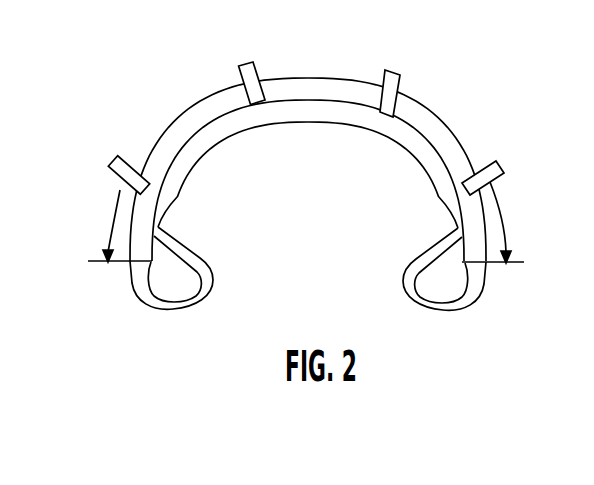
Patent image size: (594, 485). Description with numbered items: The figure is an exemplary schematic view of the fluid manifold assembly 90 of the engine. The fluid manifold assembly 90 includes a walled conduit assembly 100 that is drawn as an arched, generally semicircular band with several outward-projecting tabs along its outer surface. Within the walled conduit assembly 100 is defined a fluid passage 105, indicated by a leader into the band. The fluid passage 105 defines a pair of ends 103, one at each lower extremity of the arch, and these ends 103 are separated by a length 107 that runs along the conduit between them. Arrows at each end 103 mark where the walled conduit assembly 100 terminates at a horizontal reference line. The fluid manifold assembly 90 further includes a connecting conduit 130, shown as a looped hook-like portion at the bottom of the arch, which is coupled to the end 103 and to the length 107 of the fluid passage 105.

The fluid manifold assembly 90 is at (318, 182).
The walled conduit assembly 100 is at (318, 175).
The ends 103 is at (127, 267).
The fluid passage 105 is at (298, 110).
The length 107 is at (500, 205).
The connecting conduit 130 is at (171, 311).